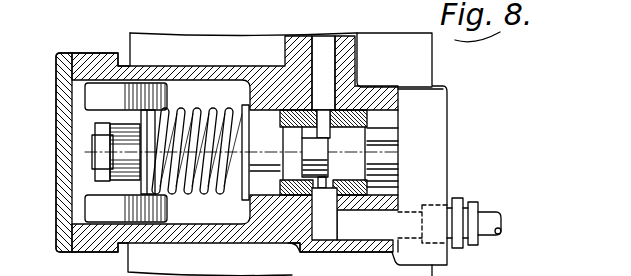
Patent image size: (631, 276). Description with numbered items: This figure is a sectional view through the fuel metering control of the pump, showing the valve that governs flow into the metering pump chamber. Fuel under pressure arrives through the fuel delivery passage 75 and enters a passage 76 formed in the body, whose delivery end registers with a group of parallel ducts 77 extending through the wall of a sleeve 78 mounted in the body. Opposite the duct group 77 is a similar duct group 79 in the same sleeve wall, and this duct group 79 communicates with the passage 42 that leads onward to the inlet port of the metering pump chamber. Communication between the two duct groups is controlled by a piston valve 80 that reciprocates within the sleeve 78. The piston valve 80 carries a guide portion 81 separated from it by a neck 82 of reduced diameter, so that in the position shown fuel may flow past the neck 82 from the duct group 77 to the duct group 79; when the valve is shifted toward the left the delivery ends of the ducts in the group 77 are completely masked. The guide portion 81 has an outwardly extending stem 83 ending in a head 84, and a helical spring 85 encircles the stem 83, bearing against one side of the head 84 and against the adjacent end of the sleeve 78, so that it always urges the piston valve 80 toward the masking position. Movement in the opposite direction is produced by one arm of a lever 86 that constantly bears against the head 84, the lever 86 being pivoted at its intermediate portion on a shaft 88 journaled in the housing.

The passage 42 is at (318, 50).
The fuel delivery passage 75 is at (490, 212).
The passage 76 is at (363, 225).
The duct group 77 is at (336, 171).
The sleeve 78 is at (295, 197).
The duct group 79 is at (360, 88).
The piston valve 80 is at (343, 205).
The guide portion 81 is at (291, 110).
The neck 82 is at (313, 118).
The stem 83 is at (203, 190).
The head 84 is at (156, 180).
The helical spring 85 is at (187, 190).
The lever 86 is at (117, 177).
The shaft 88 is at (100, 115).